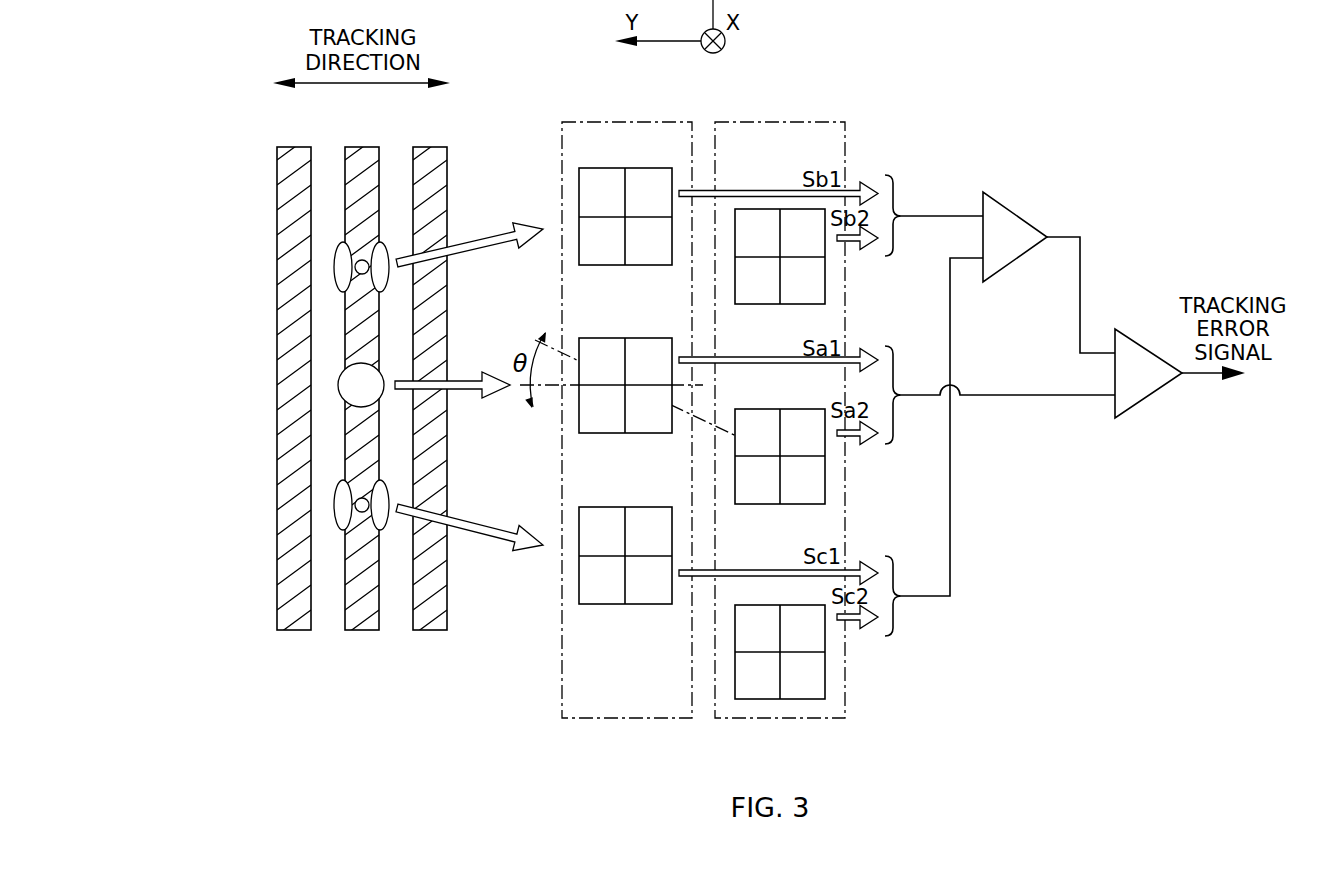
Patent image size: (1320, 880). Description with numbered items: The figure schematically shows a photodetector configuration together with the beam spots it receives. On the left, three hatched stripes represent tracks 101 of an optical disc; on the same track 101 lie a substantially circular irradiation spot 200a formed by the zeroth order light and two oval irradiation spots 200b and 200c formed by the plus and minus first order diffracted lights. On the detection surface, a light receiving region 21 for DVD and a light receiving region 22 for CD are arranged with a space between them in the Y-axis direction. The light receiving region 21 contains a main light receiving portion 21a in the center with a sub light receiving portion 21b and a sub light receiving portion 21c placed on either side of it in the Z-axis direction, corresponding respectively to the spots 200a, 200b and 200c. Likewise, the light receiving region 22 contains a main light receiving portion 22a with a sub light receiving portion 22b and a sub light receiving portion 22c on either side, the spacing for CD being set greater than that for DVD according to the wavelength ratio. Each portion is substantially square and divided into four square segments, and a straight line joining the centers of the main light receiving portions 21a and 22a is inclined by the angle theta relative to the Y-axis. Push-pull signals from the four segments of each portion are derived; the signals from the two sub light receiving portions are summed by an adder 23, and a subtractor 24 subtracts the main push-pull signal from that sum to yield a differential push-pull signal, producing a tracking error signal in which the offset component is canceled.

The track 101 is at (295, 643).
The irradiation spot 200a is at (332, 389).
The irradiation spot 200b is at (332, 265).
The irradiation spot 200c is at (332, 505).
The light receiving region for DVD 21 is at (628, 120).
The main light receiving portion 21a is at (600, 433).
The sub light receiving portion 21b is at (600, 265).
The sub light receiving portion 21c is at (600, 604).
The light receiving region for CD 22 is at (768, 120).
The main light receiving portion 22a is at (770, 504).
The sub light receiving portion 22b is at (757, 304).
The sub light receiving portion 22c is at (753, 699).
The adder 23 is at (1008, 202).
The subtractor 24 is at (1140, 340).